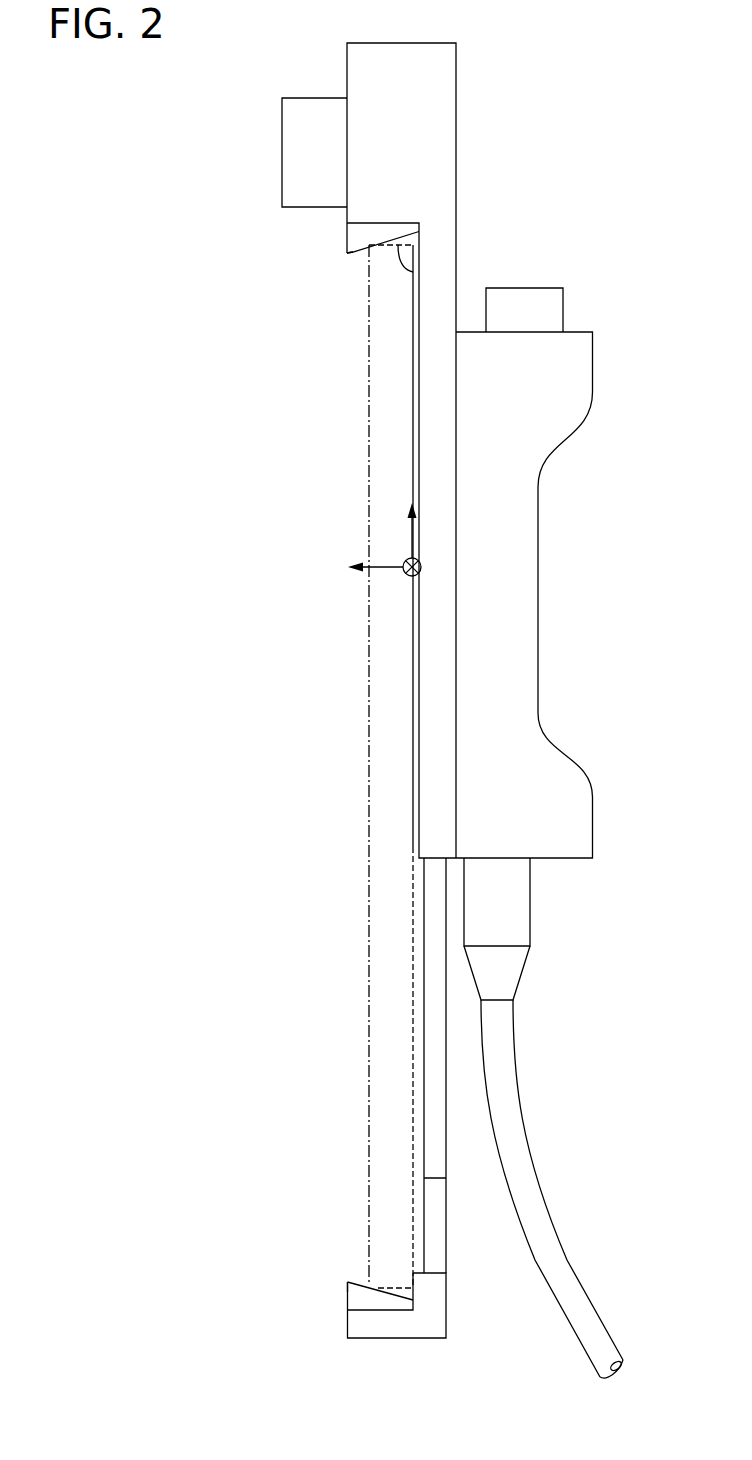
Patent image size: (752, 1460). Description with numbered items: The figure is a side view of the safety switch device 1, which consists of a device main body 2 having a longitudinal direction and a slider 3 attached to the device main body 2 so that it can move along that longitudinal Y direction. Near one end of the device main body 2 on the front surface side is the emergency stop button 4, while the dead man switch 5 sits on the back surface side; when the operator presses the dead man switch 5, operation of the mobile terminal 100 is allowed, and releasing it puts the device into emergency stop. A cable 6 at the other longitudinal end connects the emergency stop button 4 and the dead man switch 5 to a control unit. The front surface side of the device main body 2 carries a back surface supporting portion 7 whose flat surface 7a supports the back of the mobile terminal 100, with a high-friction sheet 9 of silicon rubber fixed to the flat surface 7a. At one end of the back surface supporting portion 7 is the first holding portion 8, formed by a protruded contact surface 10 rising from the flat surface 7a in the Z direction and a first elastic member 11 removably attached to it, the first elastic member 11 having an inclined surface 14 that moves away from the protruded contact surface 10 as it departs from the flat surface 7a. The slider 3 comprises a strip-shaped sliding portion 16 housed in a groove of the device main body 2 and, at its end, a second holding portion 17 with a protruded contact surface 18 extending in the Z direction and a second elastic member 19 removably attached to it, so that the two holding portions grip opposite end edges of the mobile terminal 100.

The safety switch device 1 is at (108, 140).
The device main body 2 is at (300, 76).
The slider 3 is at (458, 1318).
The emergency stop button 4 is at (282, 143).
The dead man switch 5 is at (539, 288).
The cable 6 is at (518, 1062).
The back surface supporting portion 7 is at (398, 440).
The flat surface 7a is at (418, 379).
The first holding portion 8 is at (270, 235).
The sheet 9 is at (413, 480).
The protruded contact surface 10 is at (362, 224).
The first elastic member 11 is at (339, 263).
The inclined surface 14 is at (413, 272).
The sliding portion 16 is at (448, 1242).
The second holding portion 17 is at (258, 1227).
The protruded contact surface 18 is at (345, 1289).
The second elastic member 19 is at (334, 1269).
The mobile terminal 100 is at (355, 710).